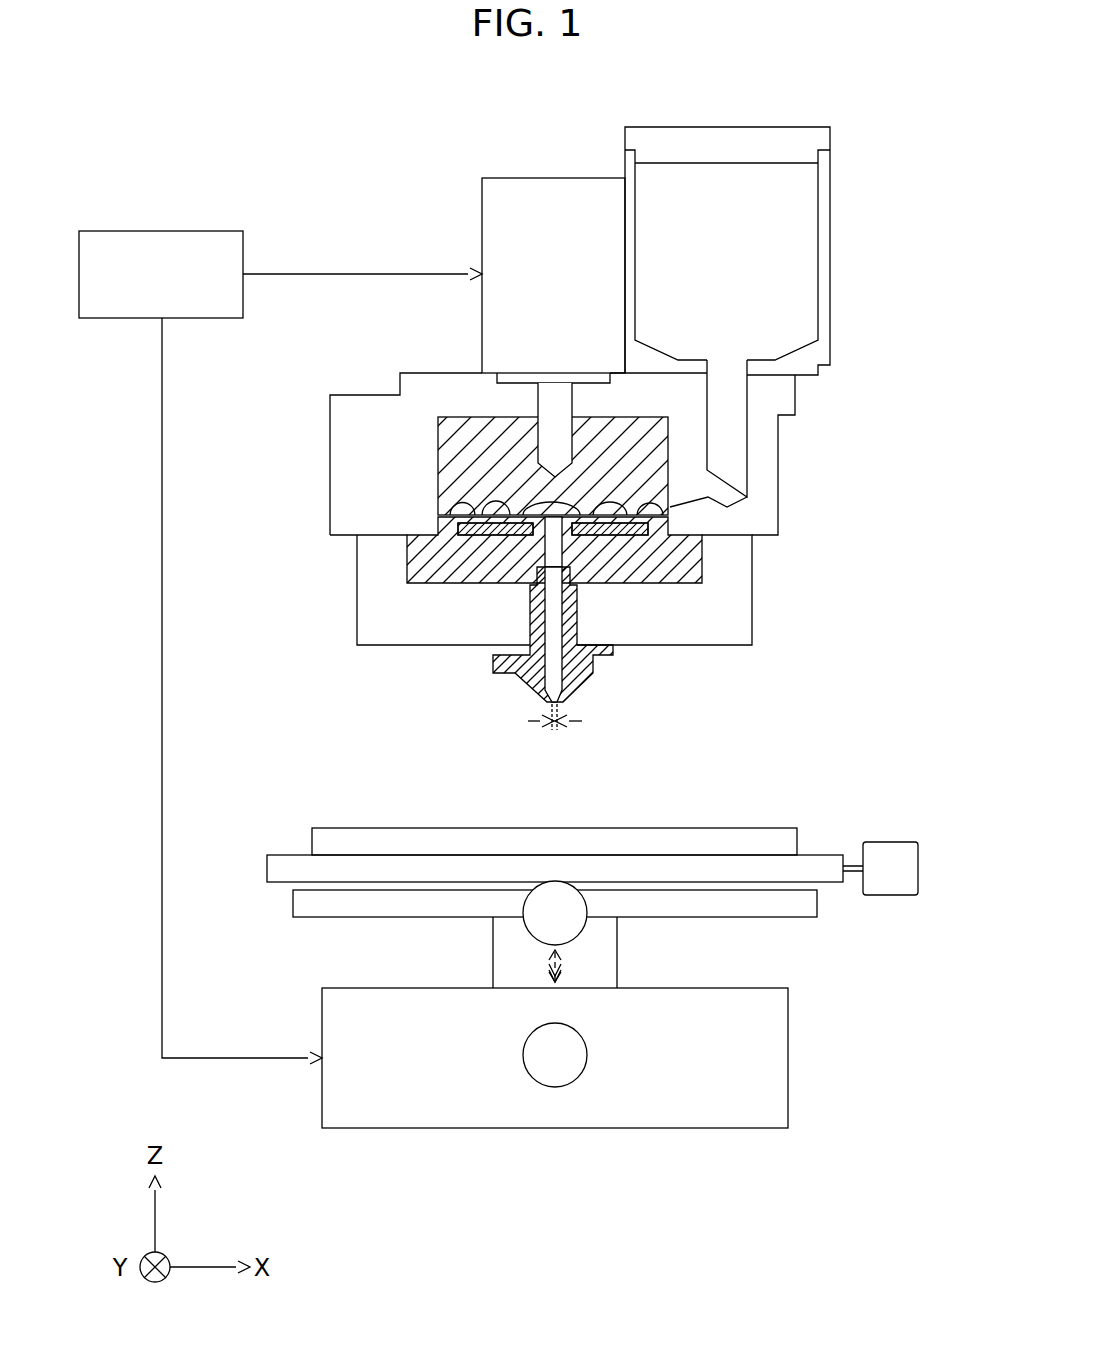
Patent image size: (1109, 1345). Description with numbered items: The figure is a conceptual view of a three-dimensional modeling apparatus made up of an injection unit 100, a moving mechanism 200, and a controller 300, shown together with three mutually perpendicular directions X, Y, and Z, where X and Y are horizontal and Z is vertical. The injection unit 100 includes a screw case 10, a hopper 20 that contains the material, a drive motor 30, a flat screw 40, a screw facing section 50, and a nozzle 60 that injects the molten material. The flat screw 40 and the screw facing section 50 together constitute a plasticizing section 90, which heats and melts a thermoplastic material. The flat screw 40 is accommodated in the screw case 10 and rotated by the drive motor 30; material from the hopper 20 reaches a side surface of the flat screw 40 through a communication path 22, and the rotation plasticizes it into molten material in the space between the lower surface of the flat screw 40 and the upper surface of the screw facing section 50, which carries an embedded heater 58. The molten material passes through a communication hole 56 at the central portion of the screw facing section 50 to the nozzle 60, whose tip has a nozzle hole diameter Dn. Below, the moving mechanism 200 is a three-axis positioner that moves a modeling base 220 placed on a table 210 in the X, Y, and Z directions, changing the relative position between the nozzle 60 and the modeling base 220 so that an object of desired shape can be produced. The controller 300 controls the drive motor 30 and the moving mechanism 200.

The injection unit 100 is at (360, 146).
The controller 300 is at (197, 231).
The screw case 10 is at (355, 395).
The hopper 20 is at (830, 243).
The communication path 22 is at (747, 432).
The drive motor 30 is at (482, 212).
The flat screw 40 is at (450, 433).
The screw facing section 50 is at (663, 562).
The communication hole 56 is at (548, 575).
The heater 58 is at (553, 548).
The nozzle 60 is at (530, 683).
The plasticizing section 90 is at (673, 447).
The moving mechanism 200 is at (593, 944).
The table 210 is at (312, 853).
The modeling base 220 is at (737, 826).